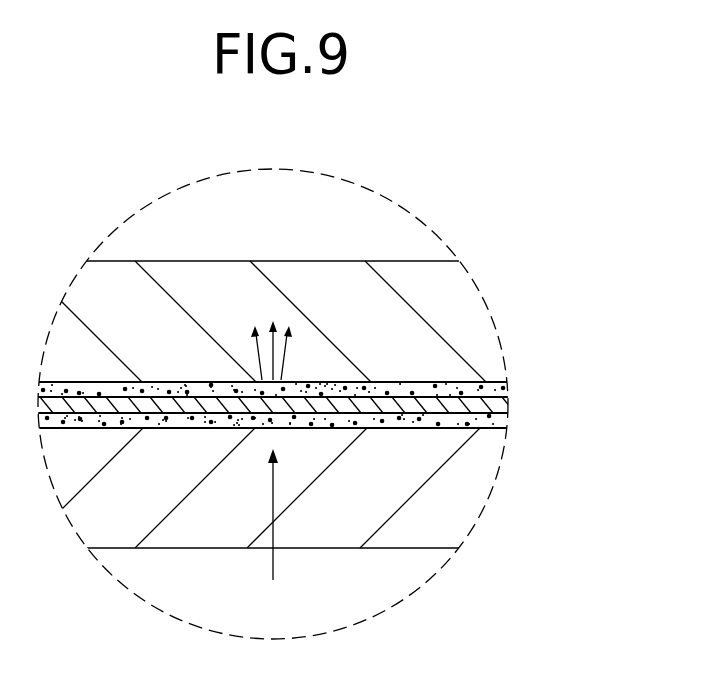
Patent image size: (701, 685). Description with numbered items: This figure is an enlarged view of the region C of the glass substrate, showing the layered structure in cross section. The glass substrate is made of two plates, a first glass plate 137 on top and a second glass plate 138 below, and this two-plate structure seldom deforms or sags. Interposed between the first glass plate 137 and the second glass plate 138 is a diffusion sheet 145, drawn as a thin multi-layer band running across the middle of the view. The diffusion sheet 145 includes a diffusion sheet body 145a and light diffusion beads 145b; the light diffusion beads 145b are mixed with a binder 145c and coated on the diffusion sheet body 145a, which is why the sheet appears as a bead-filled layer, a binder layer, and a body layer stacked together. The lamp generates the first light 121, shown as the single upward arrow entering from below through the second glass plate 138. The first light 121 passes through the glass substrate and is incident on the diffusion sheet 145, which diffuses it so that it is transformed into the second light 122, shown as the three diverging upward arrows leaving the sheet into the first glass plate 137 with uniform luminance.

The enlarged portion C is at (409, 217).
The first glass plate 137 is at (478, 323).
The second glass plate 138 is at (447, 528).
The diffusion sheet 145 is at (355, 425).
The diffusion sheet body 145a is at (507, 400).
The binder 145c is at (507, 420).
The light diffusion bead 145b is at (503, 428).
The second light 122 is at (288, 353).
The first light 121 is at (275, 522).